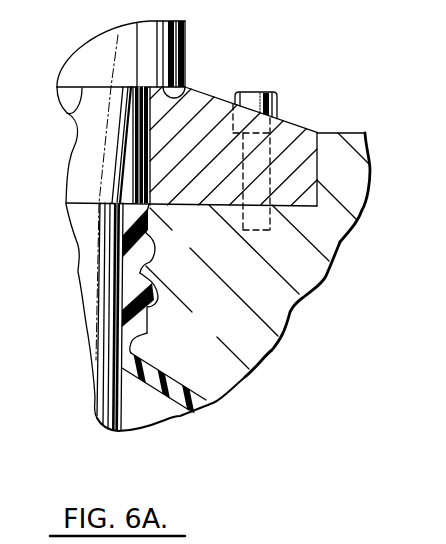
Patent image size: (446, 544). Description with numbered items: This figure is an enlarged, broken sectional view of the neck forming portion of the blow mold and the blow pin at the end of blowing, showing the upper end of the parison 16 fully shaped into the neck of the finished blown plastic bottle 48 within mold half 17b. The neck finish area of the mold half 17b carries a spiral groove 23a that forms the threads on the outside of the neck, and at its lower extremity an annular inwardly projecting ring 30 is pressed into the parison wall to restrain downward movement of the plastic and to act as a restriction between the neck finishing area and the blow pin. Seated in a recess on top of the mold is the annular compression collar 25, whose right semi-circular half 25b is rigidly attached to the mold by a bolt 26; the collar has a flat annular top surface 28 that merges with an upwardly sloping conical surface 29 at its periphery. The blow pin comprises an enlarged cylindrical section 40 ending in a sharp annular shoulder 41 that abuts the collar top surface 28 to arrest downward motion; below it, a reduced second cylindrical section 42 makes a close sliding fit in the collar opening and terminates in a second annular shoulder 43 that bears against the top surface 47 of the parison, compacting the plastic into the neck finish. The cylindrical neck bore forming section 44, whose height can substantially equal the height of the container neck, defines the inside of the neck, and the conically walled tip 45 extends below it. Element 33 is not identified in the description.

The thermoplastic parison 16 is at (146, 371).
The mold half 17b is at (300, 279).
The spiral groove 23a is at (152, 284).
The annular compression collar 25 is at (304, 100).
The right semi-circular half of compression collar 25b is at (303, 170).
The bolt 26 is at (258, 92).
The flat annular top surface 28 is at (185, 88).
The upwardly sloping conical surface 29 is at (300, 131).
The annular inwardly projecting ring 30 is at (137, 343).
The sealing member 33 is at (170, 260).
The enlarged cylindrical section 40 is at (155, 54).
The annular shoulder 41 is at (63, 108).
The second reduced cylindrical section 42 is at (90, 150).
The second annular shoulder 43 is at (83, 205).
The cylindrical neck bore forming section 44 is at (93, 305).
The tip of blow pin 45 is at (103, 392).
The top surface of parison 47 is at (142, 192).
The blown plastic bottle 48 is at (145, 425).